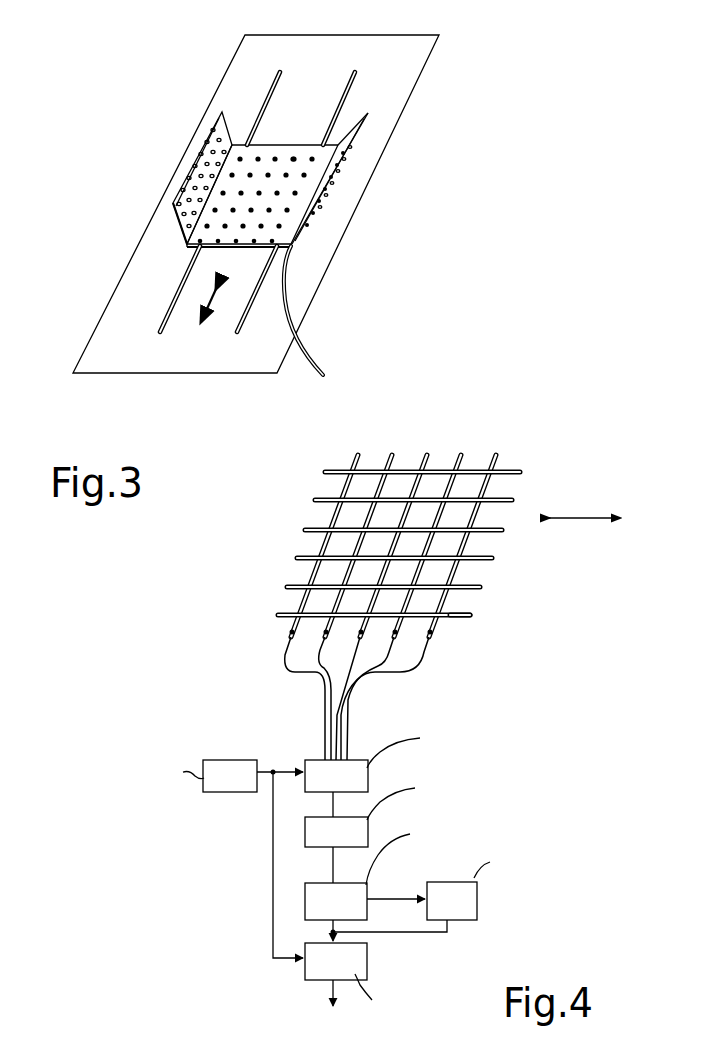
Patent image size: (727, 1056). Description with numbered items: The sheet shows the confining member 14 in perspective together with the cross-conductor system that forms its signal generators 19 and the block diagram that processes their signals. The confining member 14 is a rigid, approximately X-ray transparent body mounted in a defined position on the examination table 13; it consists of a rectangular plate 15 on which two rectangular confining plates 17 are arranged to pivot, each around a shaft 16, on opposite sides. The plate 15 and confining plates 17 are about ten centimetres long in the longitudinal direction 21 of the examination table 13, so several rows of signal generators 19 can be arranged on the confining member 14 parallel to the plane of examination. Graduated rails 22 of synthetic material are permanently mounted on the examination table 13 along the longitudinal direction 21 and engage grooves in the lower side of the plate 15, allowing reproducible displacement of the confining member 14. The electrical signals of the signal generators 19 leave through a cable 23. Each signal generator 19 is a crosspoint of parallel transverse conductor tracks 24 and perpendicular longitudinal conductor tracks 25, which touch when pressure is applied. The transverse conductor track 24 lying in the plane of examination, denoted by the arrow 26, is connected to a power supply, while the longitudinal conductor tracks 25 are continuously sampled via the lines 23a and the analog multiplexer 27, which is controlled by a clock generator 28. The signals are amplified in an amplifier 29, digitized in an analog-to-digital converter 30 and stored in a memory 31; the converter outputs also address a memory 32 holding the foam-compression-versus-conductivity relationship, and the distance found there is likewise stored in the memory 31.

In FIG. 3, the examination table 13 is at (333, 263).
In FIG. 3, the confining member 14 is at (254, 180).
In FIG. 3, the rectangular plate 15 is at (249, 247).
In FIG. 3, the shaft 16 is at (185, 246).
In FIG. 3, the confining plate 17 is at (172, 218).
In FIG. 3, the signal generator 19 is at (294, 157).
In FIG. 4, the signal generator 19 is at (452, 612).
In FIG. 3, the longitudinal direction 21 is at (210, 300).
In FIG. 3, the rails 22 is at (158, 325).
In FIG. 3, the cable 23 is at (316, 362).
In FIG. 4, the lines 23a is at (331, 716).
In FIG. 4, the transverse conductor tracks 24 is at (492, 559).
In FIG. 4, the longitudinal conductor tracks 25 is at (437, 633).
In FIG. 4, the arrow 26 is at (586, 517).
In FIG. 4, the analog multiplexer 27 is at (368, 772).
In FIG. 4, the clock generator 28 is at (228, 768).
In FIG. 4, the amplifier 29 is at (368, 822).
In FIG. 4, the analog-to-digital converter 30 is at (366, 888).
In FIG. 4, the memory 31 is at (366, 962).
In FIG. 4, the memory 32 is at (474, 887).